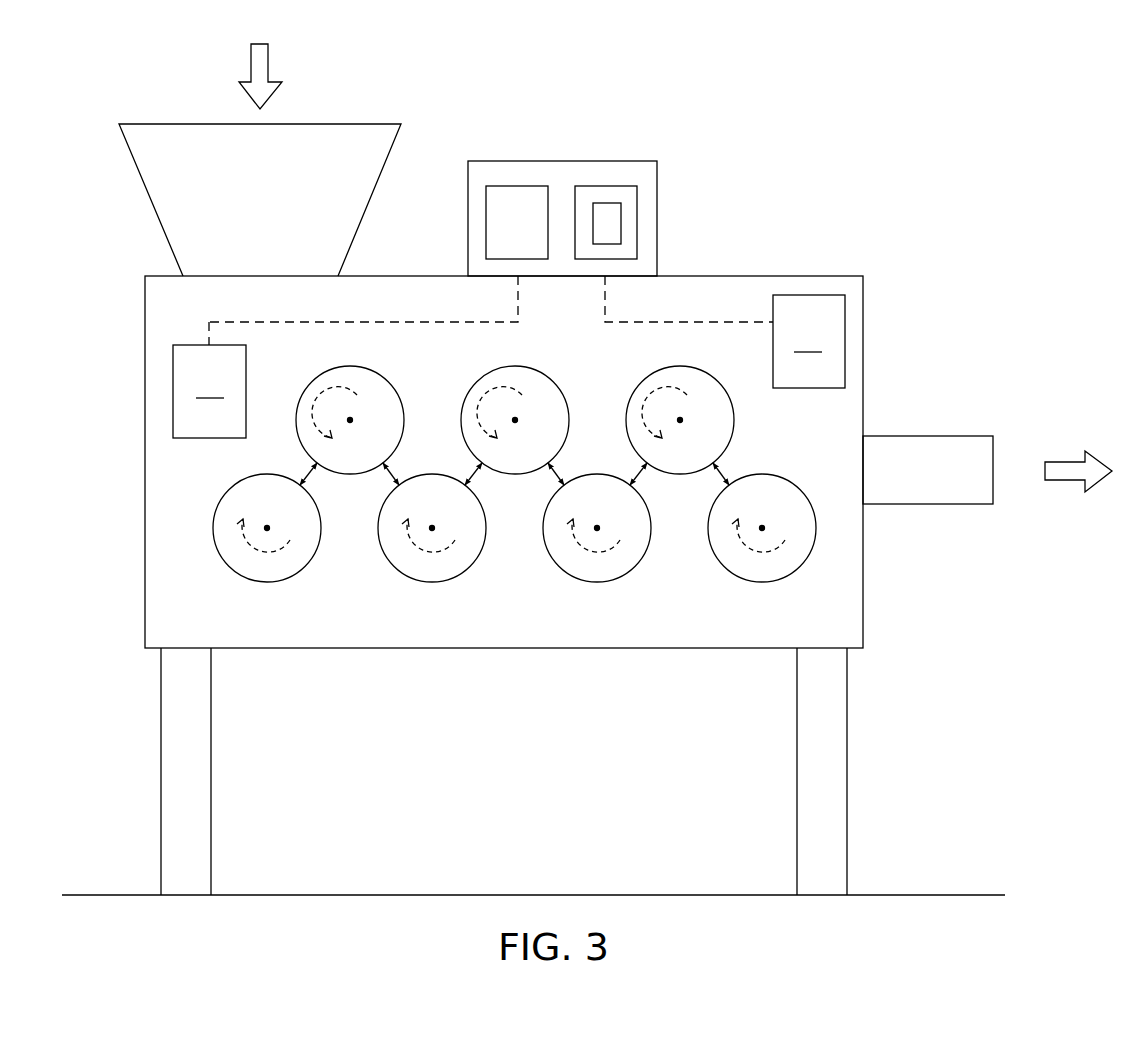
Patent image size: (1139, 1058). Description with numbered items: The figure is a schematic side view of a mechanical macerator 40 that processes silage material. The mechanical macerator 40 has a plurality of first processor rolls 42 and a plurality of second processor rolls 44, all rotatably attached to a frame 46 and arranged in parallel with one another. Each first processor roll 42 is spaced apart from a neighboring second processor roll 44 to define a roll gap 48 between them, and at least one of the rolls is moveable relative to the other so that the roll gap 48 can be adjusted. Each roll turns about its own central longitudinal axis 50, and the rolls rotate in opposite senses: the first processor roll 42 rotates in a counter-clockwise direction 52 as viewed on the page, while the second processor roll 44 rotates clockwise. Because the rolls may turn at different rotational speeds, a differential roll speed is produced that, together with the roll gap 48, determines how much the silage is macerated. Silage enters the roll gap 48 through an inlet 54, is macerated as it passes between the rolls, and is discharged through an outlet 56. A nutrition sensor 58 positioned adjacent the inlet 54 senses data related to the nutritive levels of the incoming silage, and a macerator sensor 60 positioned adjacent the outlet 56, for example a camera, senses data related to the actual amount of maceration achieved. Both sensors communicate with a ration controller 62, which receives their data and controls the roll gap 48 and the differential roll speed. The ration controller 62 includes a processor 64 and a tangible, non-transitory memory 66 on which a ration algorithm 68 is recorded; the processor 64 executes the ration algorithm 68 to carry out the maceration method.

The mechanical macerator 40 is at (848, 108).
The first processor roll 42 is at (377, 373).
The second processor roll 44 is at (298, 573).
The frame 46 is at (779, 276).
The roll gap 48 is at (308, 476).
The first roller axes 50 is at (517, 412).
The counter-clockwise direction 52 is at (522, 533).
The inlet 54 is at (289, 457).
The outlet 56 is at (768, 447).
The nutrition sensor 58 is at (209, 380).
The macerator sensor 60 is at (809, 341).
The ration controller 62 is at (516, 161).
The processor 64 is at (486, 218).
The memory 66 is at (603, 186).
The ration algorithm 68 is at (621, 222).